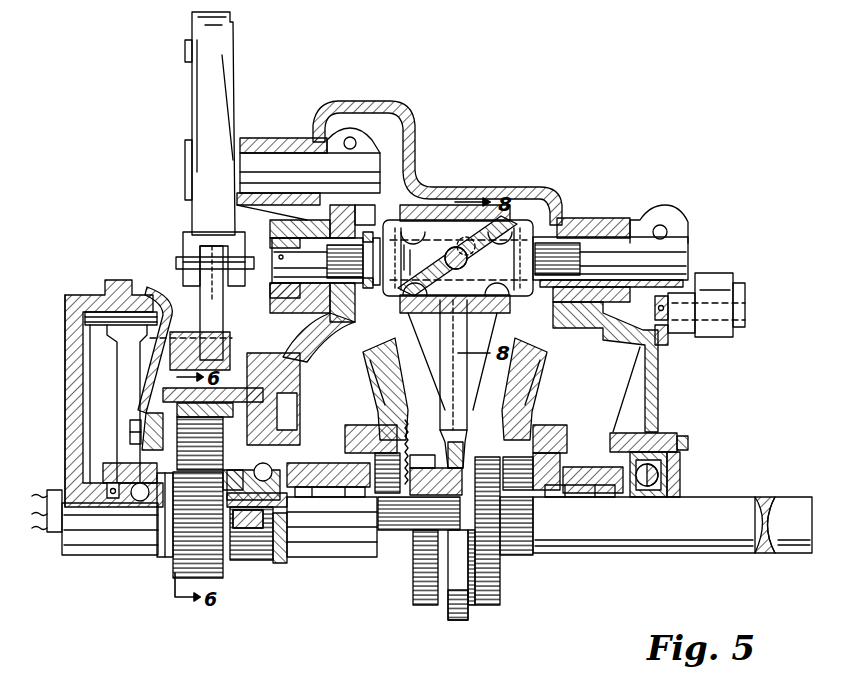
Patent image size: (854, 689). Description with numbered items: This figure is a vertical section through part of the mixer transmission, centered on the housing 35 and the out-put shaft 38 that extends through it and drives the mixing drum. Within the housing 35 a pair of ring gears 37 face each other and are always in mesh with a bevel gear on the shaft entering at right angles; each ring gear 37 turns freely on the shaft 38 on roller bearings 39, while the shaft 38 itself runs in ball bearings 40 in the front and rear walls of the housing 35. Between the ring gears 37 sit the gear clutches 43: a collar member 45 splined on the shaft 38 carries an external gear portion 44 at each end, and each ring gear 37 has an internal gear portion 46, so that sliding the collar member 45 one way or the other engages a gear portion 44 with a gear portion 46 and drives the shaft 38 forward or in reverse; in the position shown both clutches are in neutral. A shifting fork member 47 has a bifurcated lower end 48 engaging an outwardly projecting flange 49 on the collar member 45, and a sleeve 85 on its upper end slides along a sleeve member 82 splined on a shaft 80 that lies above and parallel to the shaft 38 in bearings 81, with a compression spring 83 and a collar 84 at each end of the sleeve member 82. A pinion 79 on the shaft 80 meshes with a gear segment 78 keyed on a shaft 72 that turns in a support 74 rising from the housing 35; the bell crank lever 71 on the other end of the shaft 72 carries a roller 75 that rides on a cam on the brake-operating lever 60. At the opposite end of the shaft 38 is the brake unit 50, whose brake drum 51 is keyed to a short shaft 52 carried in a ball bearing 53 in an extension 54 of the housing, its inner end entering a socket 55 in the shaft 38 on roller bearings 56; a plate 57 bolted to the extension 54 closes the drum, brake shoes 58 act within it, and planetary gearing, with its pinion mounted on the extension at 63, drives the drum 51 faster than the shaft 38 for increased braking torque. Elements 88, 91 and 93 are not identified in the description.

The housing 35 is at (660, 385).
The ring gears 37 is at (372, 358).
The out-put shaft 38 is at (582, 535).
The roller bearings 39 is at (314, 498).
The ball bearing 40 is at (278, 470).
The gear clutches 43 is at (426, 475).
The external gear portion 44 is at (488, 475).
The collar member 45 is at (472, 592).
The internal gear portion 46 is at (384, 458).
The shifting fork member 47 is at (456, 396).
The bifurcated lower end 48 is at (470, 443).
The outwardly projecting flange 49 is at (460, 622).
The brake unit 50 is at (114, 280).
The brake drum 51 is at (67, 343).
The short shaft 52 is at (142, 540).
The ball bearing 53 is at (130, 507).
The extension 54 is at (108, 468).
The socket 55 is at (282, 548).
The roller bearings 56 is at (250, 545).
The plate 57 is at (152, 288).
The brake shoes 58 is at (108, 318).
The lever 60 is at (208, 312).
The pinion mounting 63 is at (134, 438).
The bell crank lever 71 is at (210, 93).
The shaft 72 is at (256, 170).
The support 74 is at (300, 138).
The roller 75 is at (191, 252).
The gear segment 78 is at (275, 232).
The pinion 79 is at (357, 302).
The shaft 80 is at (275, 282).
The bearings 81 is at (303, 298).
The sleeve member 82 is at (552, 304).
The compression spring 83 is at (372, 236).
The collar 84 is at (576, 226).
The sleeve 85 is at (442, 208).
The diagonal shaft 88 is at (490, 214).
The flange 91 is at (681, 333).
The motor coupling 93 is at (745, 292).